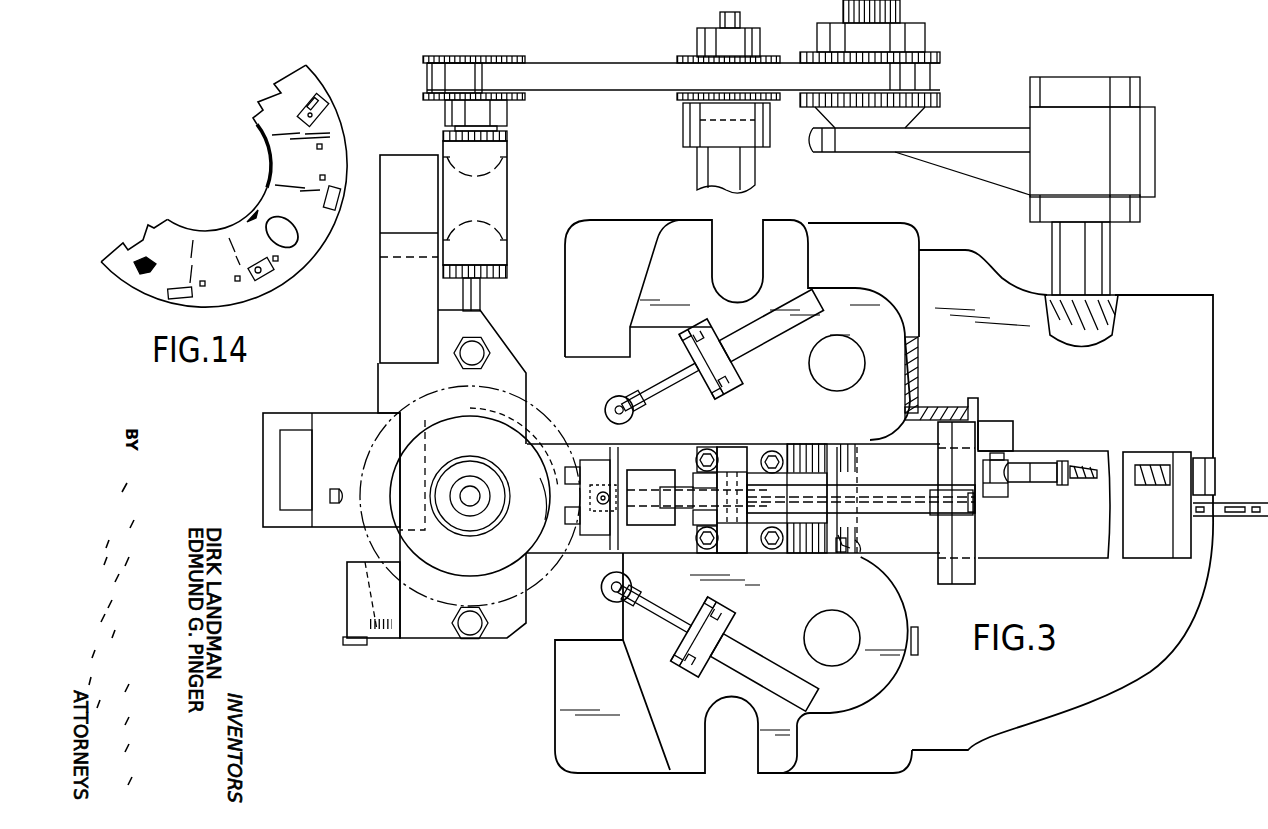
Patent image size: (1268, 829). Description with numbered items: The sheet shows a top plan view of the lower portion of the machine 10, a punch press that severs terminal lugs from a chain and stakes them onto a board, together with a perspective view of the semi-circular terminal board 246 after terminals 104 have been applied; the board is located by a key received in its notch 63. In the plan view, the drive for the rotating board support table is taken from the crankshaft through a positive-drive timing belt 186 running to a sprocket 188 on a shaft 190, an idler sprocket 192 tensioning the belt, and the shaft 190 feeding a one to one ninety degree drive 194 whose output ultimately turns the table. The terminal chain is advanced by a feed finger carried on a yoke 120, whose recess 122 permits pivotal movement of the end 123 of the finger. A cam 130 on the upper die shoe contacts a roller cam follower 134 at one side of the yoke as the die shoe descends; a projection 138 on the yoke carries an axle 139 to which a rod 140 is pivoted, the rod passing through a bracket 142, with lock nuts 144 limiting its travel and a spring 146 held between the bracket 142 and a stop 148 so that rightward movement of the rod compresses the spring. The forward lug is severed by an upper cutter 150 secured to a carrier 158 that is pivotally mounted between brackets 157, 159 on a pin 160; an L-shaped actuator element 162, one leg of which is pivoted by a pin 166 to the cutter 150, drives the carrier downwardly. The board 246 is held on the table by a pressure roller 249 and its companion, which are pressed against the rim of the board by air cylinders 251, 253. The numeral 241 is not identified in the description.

In FIG. 3, the machine 10 is at (492, 686).
In FIG. 14, the notch 63 is at (250, 210).
In FIG. 14, the terminal 104 is at (322, 110).
In FIG. 3, the yoke 120 is at (983, 578).
In FIG. 3, the recess 122 is at (973, 517).
In FIG. 3, the end of the feed finger 123 is at (974, 510).
In FIG. 3, the cam 130 is at (948, 407).
In FIG. 3, the roller cam follower 134 is at (978, 413).
In FIG. 3, the projection 138 is at (1008, 438).
In FIG. 3, the axle 139 is at (1008, 493).
In FIG. 3, the rod 140 is at (1050, 463).
In FIG. 3, the bracket 142 is at (1182, 552).
In FIG. 3, the lock nuts 144 is at (1207, 463).
In FIG. 3, the spring 146 is at (1147, 463).
In FIG. 3, the stop 148 is at (1066, 487).
In FIG. 3, the upper cutter 150 is at (650, 477).
In FIG. 3, the bracket 157 is at (858, 457).
In FIG. 3, the carrier 158 is at (797, 478).
In FIG. 3, the bracket 159 is at (857, 553).
In FIG. 3, the pin 160 is at (843, 553).
In FIG. 3, the actuator element 162 is at (742, 477).
In FIG. 3, the pin 166 is at (674, 477).
In FIG. 3, the positive-drive timing belt 186 is at (630, 63).
In FIG. 3, the sprocket 188 is at (456, 55).
In FIG. 3, the shaft 190 is at (485, 122).
In FIG. 3, the idler sprocket 192 is at (692, 50).
In FIG. 3, the one to one 90° drive 194 is at (502, 200).
In FIG. 3, the pivot 241 is at (612, 600).
In FIG. 14, the terminal board 246 is at (152, 293).
In FIG. 3, the pressure roller 249 is at (608, 384).
In FIG. 3, the air cylinder 251 is at (757, 658).
In FIG. 3, the air cylinder 253 is at (818, 318).